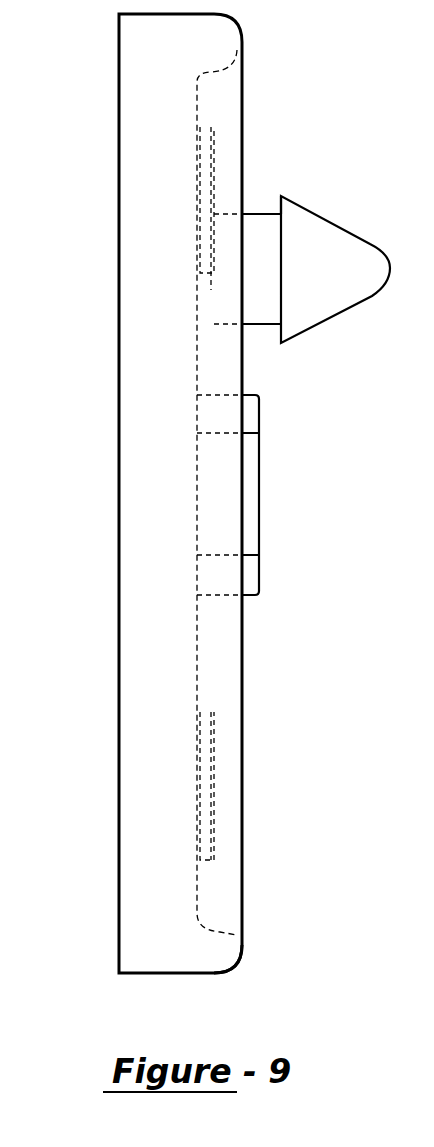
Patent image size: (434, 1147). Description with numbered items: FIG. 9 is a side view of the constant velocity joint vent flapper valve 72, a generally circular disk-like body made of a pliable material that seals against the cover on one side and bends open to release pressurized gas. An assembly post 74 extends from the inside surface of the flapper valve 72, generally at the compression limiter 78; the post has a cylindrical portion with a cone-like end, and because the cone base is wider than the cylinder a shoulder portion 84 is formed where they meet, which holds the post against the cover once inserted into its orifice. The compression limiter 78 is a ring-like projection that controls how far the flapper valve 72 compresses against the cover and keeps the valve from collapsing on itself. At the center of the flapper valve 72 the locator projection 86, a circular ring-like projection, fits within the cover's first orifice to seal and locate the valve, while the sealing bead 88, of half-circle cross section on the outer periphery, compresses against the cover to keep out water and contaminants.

The flapper valve 72 is at (119, 424).
The assembly post 74 is at (342, 310).
The compression limiter 78 is at (200, 787).
The shoulder portion 84 is at (281, 196).
The locator projection 86 is at (250, 572).
The sealing bead 88 is at (212, 947).